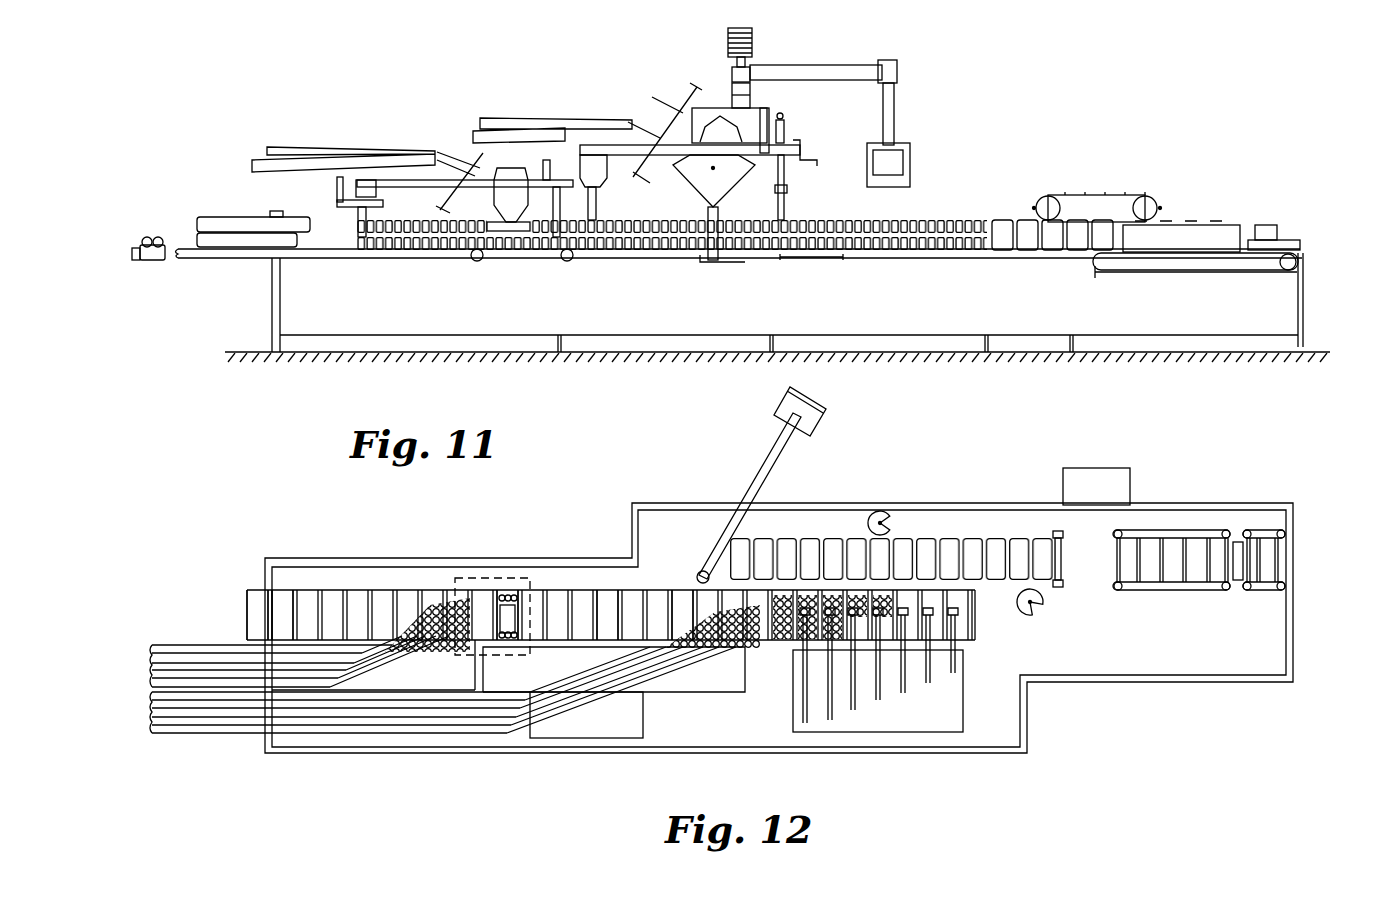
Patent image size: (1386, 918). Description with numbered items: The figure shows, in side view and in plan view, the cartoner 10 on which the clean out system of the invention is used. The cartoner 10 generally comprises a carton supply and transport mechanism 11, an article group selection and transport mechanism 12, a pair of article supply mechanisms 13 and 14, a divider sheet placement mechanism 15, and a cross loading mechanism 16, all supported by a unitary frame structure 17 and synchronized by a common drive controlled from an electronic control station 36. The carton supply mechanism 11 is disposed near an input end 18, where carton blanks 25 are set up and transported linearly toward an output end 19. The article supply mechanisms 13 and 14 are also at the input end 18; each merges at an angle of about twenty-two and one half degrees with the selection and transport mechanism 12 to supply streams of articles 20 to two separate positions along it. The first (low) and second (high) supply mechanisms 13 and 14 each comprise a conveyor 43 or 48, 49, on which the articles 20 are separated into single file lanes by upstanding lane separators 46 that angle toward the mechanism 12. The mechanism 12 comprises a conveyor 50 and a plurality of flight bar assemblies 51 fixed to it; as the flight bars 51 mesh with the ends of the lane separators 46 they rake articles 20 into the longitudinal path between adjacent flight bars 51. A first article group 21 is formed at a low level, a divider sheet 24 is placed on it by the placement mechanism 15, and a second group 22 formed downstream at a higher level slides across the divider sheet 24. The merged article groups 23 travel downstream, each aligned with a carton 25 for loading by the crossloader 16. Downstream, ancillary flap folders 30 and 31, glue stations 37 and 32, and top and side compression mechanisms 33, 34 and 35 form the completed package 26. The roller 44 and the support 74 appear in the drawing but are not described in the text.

In FIG. 11, the cartoner 10 is at (1198, 190).
In FIG. 12, the cartoner 10 is at (1265, 488).
In FIG. 11, the carton supply and transport mechanism 11 is at (783, 105).
In FIG. 12, the carton supply and transport mechanism 11 is at (742, 483).
In FIG. 12, the article group selection and transport mechanism 12 is at (242, 592).
In FIG. 11, the article supply mechanism 13 is at (127, 238).
In FIG. 12, the article supply mechanism 13 is at (132, 652).
In FIG. 11, the article supply mechanism 14 is at (210, 205).
In FIG. 12, the article supply mechanism 14 is at (137, 718).
In FIG. 11, the divider sheet placement mechanism 15 is at (397, 145).
In FIG. 12, the divider sheet placement mechanism 15 is at (477, 576).
In FIG. 12, the cross loading mechanism 16 is at (790, 712).
In FIG. 11, the unitary frame structure 17 is at (278, 300).
In FIG. 12, the unitary frame structure 17 is at (988, 503).
In FIG. 11, the input end 18 is at (140, 228).
In FIG. 12, the input end 18 is at (172, 635).
In FIG. 11, the output end 19 is at (1303, 242).
In FIG. 12, the output end 19 is at (1296, 585).
In FIG. 11, the articles 20 is at (622, 223).
In FIG. 12, the articles 20 is at (448, 655).
In FIG. 11, the first article group 21 is at (516, 252).
In FIG. 12, the first article group 21 is at (506, 590).
In FIG. 11, the second article group 22 is at (809, 166).
In FIG. 12, the second article group 22 is at (785, 645).
In FIG. 11, the merged article groups 23 is at (878, 254).
In FIG. 11, the divider sheet 24 is at (498, 236).
In FIG. 12, the divider sheet 24 is at (516, 648).
In FIG. 12, the carton blanks 25 is at (826, 535).
In FIG. 11, the completed package 26 is at (1265, 222).
In FIG. 12, the completed package 26 is at (1282, 557).
In FIG. 12, the flap folder 30 is at (950, 498).
In FIG. 12, the flap folder 31 is at (877, 512).
In FIG. 12, the glue station 32 is at (1130, 468).
In FIG. 11, the top compression mechanism 33 is at (1100, 192).
In FIG. 11, the side compression mechanism 34 is at (1215, 256).
In FIG. 12, the side compression mechanism 34 is at (1195, 592).
In FIG. 11, the side compression mechanism 35 is at (1290, 235).
In FIG. 12, the side compression mechanism 35 is at (1265, 592).
In FIG. 11, the electronic control station 36 is at (920, 147).
In FIG. 12, the electronic control station 36 is at (823, 424).
In FIG. 12, the glue station 37 is at (1057, 530).
In FIG. 12, the conveyor 43 is at (180, 645).
In FIG. 11, the drive roller 44 is at (567, 262).
In FIG. 12, the lane separators 46 is at (227, 673).
In FIG. 12, the conveyor 48 is at (596, 731).
In FIG. 12, the conveyor 49 is at (701, 686).
In FIG. 11, the conveyor 50 is at (1143, 272).
In FIG. 12, the conveyor 50 is at (553, 590).
In FIG. 12, the flight bar assemblies 51 is at (608, 588).
In FIG. 11, the support 74 is at (732, 262).